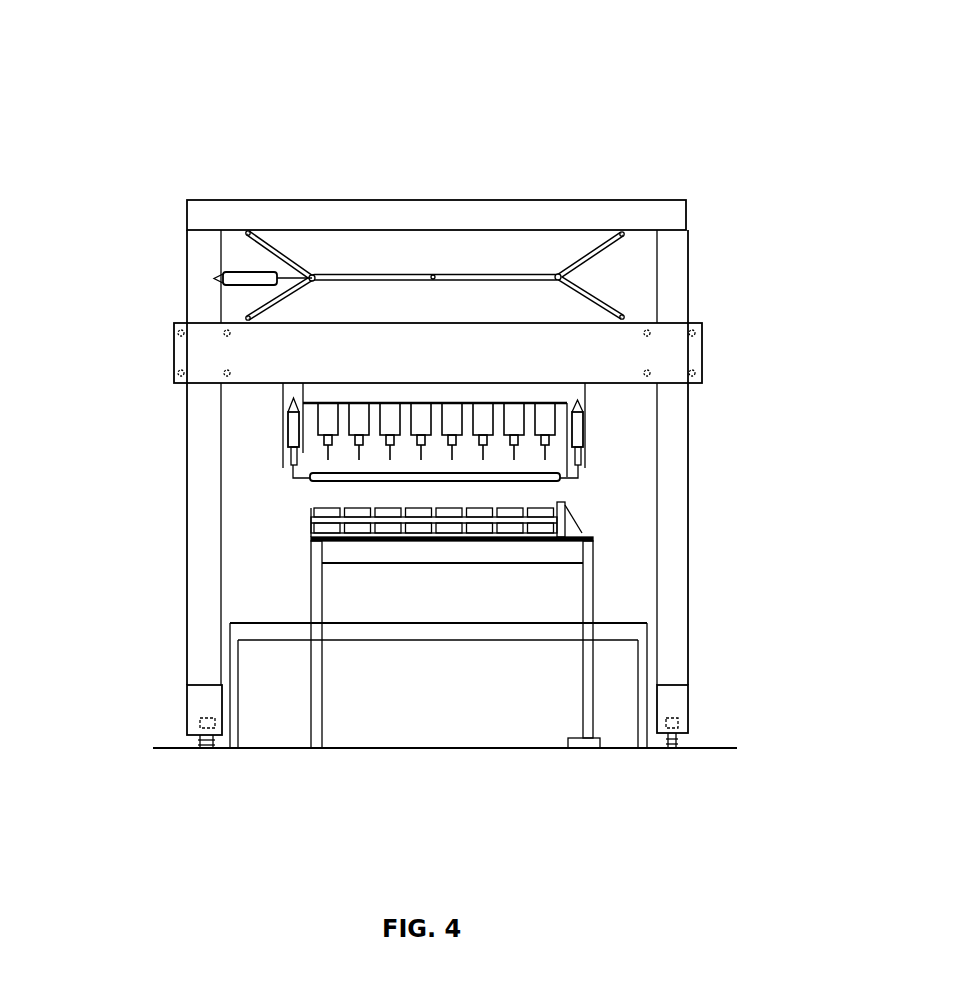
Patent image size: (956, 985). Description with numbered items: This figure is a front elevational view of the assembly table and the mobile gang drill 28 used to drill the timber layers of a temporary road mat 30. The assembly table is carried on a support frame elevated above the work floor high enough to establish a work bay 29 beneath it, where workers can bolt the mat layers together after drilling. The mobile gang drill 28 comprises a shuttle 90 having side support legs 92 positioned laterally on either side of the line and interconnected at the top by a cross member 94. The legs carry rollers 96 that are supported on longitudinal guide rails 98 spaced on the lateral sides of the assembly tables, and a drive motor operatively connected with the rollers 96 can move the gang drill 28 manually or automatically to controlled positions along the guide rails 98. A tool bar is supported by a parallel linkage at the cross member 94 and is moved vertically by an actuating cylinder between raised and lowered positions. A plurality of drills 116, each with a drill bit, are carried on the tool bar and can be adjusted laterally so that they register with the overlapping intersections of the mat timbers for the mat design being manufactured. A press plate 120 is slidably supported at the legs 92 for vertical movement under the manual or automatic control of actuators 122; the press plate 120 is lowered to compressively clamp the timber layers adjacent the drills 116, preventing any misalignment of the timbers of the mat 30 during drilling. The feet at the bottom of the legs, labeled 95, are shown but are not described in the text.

The mobile gang drill 28 is at (344, 82).
The work bay 29 is at (438, 642).
The temporary road mat 30 is at (311, 522).
The shuttle 90 is at (688, 214).
The side support legs 92 is at (187, 248).
The cross member 94 is at (320, 200).
The foot 95 is at (198, 698).
The rollers 96 is at (200, 724).
The longitudinal guide rails 98 is at (205, 745).
The drills 116 is at (515, 413).
The press plate 120 is at (537, 489).
The actuators 122 is at (585, 419).